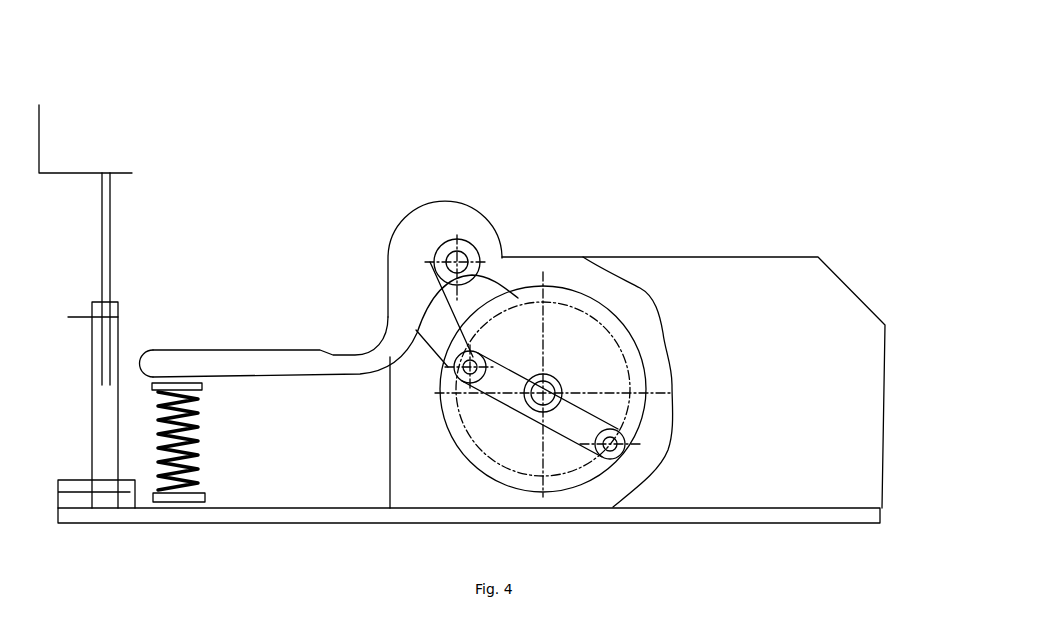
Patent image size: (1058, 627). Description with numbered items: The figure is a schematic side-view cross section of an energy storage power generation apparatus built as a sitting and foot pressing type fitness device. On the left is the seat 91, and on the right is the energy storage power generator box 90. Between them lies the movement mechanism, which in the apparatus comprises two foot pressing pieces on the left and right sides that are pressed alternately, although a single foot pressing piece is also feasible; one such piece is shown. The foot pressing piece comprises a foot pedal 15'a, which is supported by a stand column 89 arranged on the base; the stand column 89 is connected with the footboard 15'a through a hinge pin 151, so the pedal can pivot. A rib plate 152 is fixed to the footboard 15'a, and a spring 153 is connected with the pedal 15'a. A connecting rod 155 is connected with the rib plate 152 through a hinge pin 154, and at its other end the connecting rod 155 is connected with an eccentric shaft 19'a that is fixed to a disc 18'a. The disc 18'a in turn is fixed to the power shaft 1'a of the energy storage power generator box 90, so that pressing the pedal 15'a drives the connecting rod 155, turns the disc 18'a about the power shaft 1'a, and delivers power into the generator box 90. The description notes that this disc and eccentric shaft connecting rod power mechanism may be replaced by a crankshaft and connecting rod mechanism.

The seat 91 is at (106, 175).
The spring 153 is at (177, 385).
The foot pedal 15'a is at (329, 204).
The rib plate 152 is at (436, 292).
The hinge pin 151 is at (455, 252).
The stand column 89 is at (482, 222).
The energy storage power generator box 90 is at (745, 273).
The disc 18'a is at (610, 262).
The connecting rod 155 is at (513, 393).
The power shaft 1'a is at (623, 222).
The hinge pin 154 is at (471, 352).
The eccentric shaft 19'a is at (651, 245).